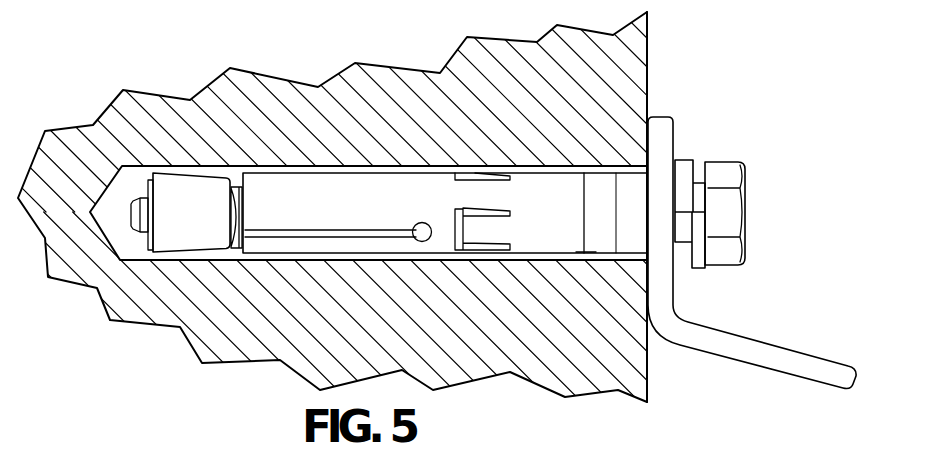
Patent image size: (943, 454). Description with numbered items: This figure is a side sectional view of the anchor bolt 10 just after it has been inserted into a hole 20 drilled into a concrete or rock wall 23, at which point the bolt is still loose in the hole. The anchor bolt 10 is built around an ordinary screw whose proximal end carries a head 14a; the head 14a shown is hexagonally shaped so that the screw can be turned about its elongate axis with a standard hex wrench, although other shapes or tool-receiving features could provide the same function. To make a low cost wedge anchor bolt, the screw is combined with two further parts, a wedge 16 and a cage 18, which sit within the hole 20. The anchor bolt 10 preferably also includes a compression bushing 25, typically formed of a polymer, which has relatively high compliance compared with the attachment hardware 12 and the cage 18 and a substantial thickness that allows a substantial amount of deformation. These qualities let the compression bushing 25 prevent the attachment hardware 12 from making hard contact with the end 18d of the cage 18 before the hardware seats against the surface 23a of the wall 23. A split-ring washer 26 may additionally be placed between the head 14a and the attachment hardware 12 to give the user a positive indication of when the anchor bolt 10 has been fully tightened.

The anchor bolt 10 is at (740, 133).
The attachment hardware 12 is at (772, 342).
The head 14a is at (748, 213).
The wedge 16 is at (192, 185).
The cage 18 is at (538, 183).
The end of the cage 18d is at (585, 240).
The hole 20 is at (357, 173).
The wall 23 is at (275, 75).
The surface 23a is at (648, 75).
The compression bushing 25 is at (597, 212).
The split-ring washer 26 is at (688, 160).